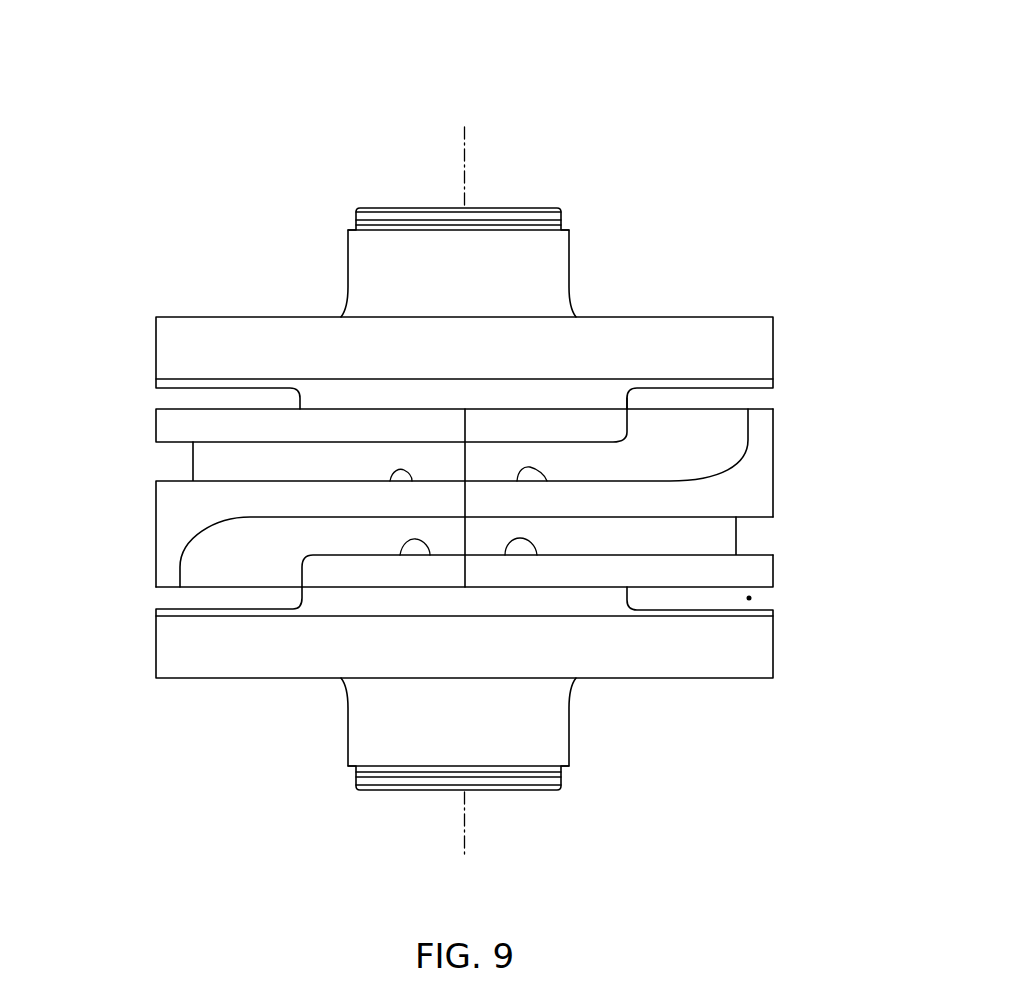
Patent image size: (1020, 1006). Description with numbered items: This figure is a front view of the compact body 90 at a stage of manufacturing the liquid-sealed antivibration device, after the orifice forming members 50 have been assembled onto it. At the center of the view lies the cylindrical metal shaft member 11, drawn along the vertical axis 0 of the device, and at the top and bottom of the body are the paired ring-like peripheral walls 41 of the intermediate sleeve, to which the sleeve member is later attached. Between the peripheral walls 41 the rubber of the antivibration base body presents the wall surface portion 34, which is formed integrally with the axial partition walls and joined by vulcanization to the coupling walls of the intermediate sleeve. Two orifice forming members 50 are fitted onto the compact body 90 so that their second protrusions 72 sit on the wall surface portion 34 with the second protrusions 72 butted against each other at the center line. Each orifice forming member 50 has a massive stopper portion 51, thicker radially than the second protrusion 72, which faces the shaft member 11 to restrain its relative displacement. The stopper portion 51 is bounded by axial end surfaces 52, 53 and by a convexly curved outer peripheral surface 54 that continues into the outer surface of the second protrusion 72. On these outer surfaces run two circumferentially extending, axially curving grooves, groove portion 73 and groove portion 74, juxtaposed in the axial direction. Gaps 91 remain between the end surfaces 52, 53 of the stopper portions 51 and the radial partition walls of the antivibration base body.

The axis 0 is at (467, 145).
The compact body 90 is at (744, 123).
The shaft member 11 is at (550, 216).
The peripheral wall 41 is at (702, 336).
The wall surface portion 34 is at (452, 393).
The orifice forming member 50 is at (125, 393).
The stopper portion 51 is at (175, 503).
The end surface 52 is at (165, 590).
The end surface 53 is at (180, 408).
The outer peripheral surface 54 is at (153, 535).
The second protrusion 72 is at (393, 424).
The groove portion 73 is at (390, 481).
The groove portion 74 is at (400, 555).
The gap 91 is at (750, 598).